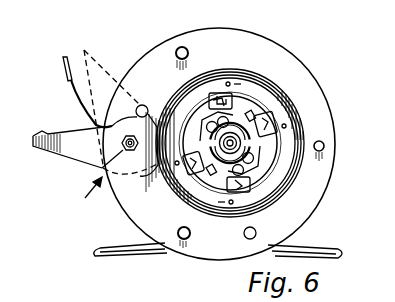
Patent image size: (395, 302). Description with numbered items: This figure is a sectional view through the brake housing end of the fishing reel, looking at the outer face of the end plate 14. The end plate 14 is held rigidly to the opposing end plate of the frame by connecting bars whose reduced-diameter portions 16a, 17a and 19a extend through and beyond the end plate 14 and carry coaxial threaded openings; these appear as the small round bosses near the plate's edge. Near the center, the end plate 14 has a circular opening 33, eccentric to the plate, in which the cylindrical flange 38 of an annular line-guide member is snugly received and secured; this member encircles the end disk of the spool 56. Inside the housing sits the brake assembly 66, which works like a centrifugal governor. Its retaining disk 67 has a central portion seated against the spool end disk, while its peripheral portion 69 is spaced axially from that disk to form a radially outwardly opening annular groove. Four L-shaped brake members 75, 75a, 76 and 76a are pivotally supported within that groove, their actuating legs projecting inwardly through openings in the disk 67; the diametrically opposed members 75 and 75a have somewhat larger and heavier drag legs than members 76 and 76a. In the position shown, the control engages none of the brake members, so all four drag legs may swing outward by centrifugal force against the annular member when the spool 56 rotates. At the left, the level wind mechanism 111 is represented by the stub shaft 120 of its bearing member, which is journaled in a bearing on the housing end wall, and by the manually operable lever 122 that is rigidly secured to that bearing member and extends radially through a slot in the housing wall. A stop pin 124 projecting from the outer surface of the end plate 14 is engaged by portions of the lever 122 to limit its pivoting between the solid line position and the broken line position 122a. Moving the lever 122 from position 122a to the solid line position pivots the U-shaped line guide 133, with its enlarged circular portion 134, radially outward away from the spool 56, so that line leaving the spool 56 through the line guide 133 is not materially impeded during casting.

The end plate 14 is at (268, 52).
The reduced-diameter portion of top bar 16a is at (181, 46).
The reduced-diameter portion of rear bar 17a is at (325, 146).
The reduced-diameter portion of front bottom bar 19a is at (186, 241).
The circular opening 33 is at (273, 76).
The cylindrical flange 38 is at (293, 96).
The spool 56 is at (303, 126).
The brake assembly 66 is at (218, 92).
The retaining disk 67 is at (296, 184).
The peripheral portion 69 is at (276, 193).
The brake member 75 is at (222, 95).
The brake member 75a is at (244, 191).
The brake member 76 is at (277, 131).
The brake member 76a is at (188, 172).
The level wind mechanism 111 is at (82, 192).
The stub shaft 120 is at (101, 169).
The lever 122 is at (46, 132).
The broken line position of lever 122a is at (93, 62).
The stop pin 124 is at (143, 105).
The line guide 133 is at (72, 82).
The circular portion 134 is at (64, 57).